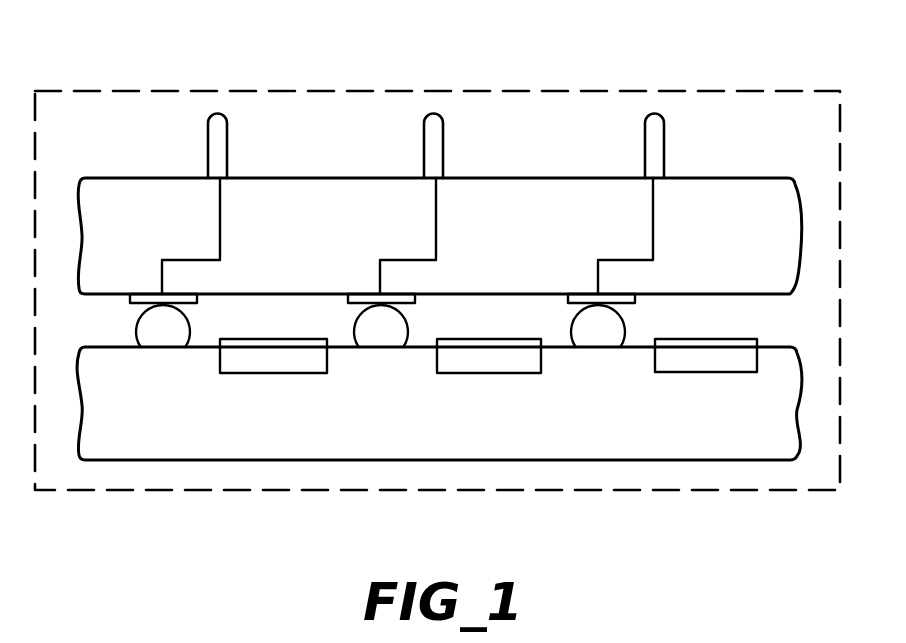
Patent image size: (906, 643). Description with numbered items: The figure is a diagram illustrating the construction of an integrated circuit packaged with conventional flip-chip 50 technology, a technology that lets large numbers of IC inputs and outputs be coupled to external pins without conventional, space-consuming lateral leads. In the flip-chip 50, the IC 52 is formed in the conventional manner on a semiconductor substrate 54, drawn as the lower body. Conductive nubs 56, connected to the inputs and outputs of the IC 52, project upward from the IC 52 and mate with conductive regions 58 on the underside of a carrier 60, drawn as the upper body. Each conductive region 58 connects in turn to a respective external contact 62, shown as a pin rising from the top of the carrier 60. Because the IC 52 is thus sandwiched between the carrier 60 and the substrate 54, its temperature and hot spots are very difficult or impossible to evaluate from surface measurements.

The flip-chip 50 is at (160, 90).
The IC 52 is at (285, 362).
The semiconductor substrate 54 is at (232, 425).
The conductive nubs 56 is at (165, 330).
The conductive regions 58 is at (148, 298).
The carrier 60 is at (733, 225).
The external contacts 62 is at (218, 147).